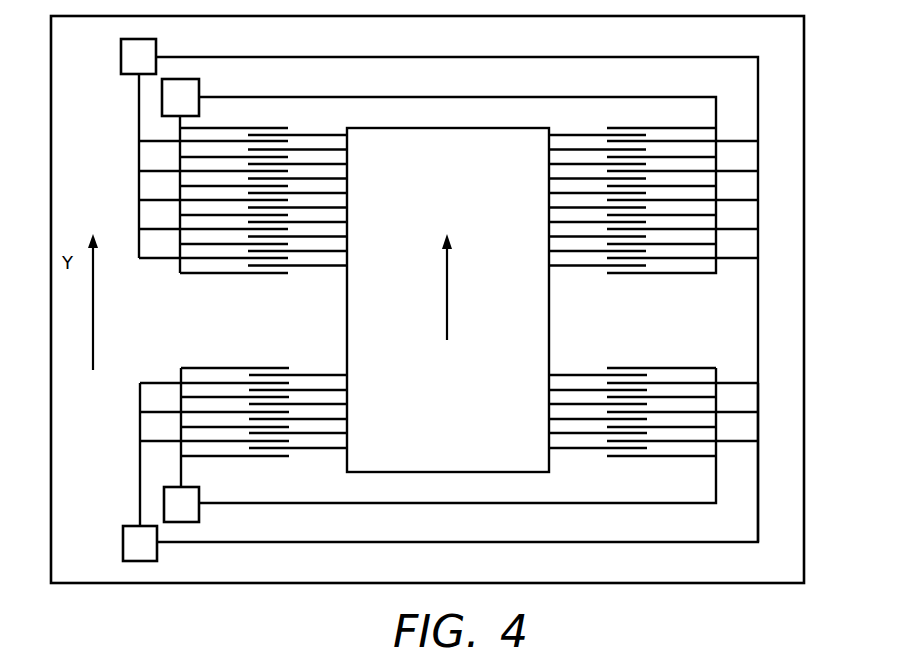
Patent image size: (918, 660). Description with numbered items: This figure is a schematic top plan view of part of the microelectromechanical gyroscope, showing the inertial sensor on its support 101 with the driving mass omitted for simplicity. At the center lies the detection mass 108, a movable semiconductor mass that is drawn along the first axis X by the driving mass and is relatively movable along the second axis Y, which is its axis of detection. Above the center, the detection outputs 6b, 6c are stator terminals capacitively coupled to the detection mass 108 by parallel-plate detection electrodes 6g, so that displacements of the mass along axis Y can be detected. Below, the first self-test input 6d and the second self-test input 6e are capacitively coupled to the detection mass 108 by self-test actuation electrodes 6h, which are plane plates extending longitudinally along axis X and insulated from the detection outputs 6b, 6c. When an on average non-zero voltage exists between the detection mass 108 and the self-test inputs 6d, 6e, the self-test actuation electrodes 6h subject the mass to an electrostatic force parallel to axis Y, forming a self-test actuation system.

The detection output 6b is at (121, 57).
The detection output 6c is at (199, 97).
The first self-test input 6d is at (138, 526).
The second self-test input 6e is at (199, 510).
The parallel-plate detection electrodes 6g is at (150, 142).
The self-test actuation electrodes 6h is at (171, 383).
The support 101 is at (103, 577).
The detection mass 108 is at (467, 414).